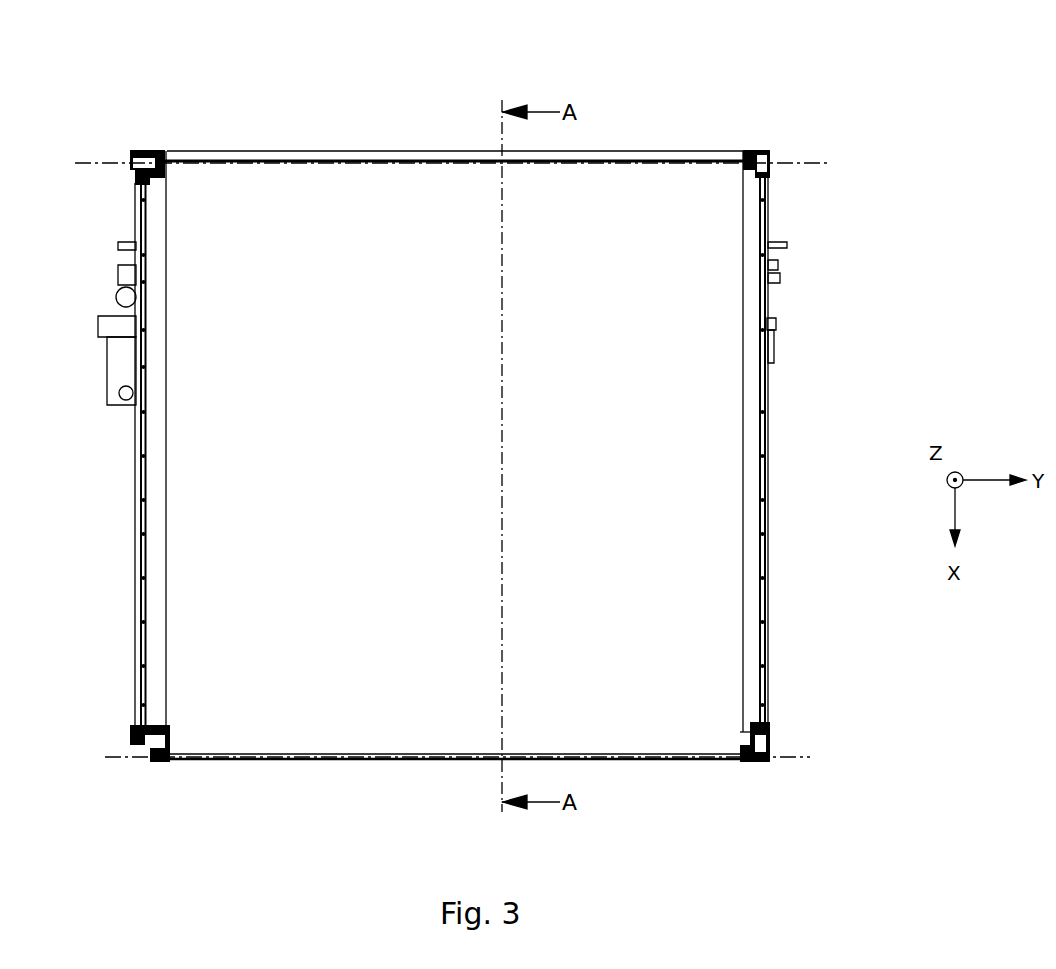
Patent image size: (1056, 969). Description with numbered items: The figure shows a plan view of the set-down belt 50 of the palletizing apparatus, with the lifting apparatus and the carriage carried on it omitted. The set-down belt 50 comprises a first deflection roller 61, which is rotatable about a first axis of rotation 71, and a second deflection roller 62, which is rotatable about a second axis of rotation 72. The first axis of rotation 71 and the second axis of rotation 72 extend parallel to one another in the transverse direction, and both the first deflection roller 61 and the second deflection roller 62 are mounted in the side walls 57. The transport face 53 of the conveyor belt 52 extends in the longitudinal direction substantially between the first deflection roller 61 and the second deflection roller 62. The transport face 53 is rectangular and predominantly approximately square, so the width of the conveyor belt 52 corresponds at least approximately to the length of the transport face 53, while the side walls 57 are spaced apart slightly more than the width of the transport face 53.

The set-down belt 50 is at (940, 182).
The conveyor belt 52 is at (333, 649).
The transport face 53 is at (387, 728).
The side walls 57 is at (138, 599).
The first deflection roller 61 is at (748, 762).
The second deflection roller 62 is at (741, 150).
The first axis of rotation 71 is at (780, 755).
The second axis of rotation 72 is at (790, 163).